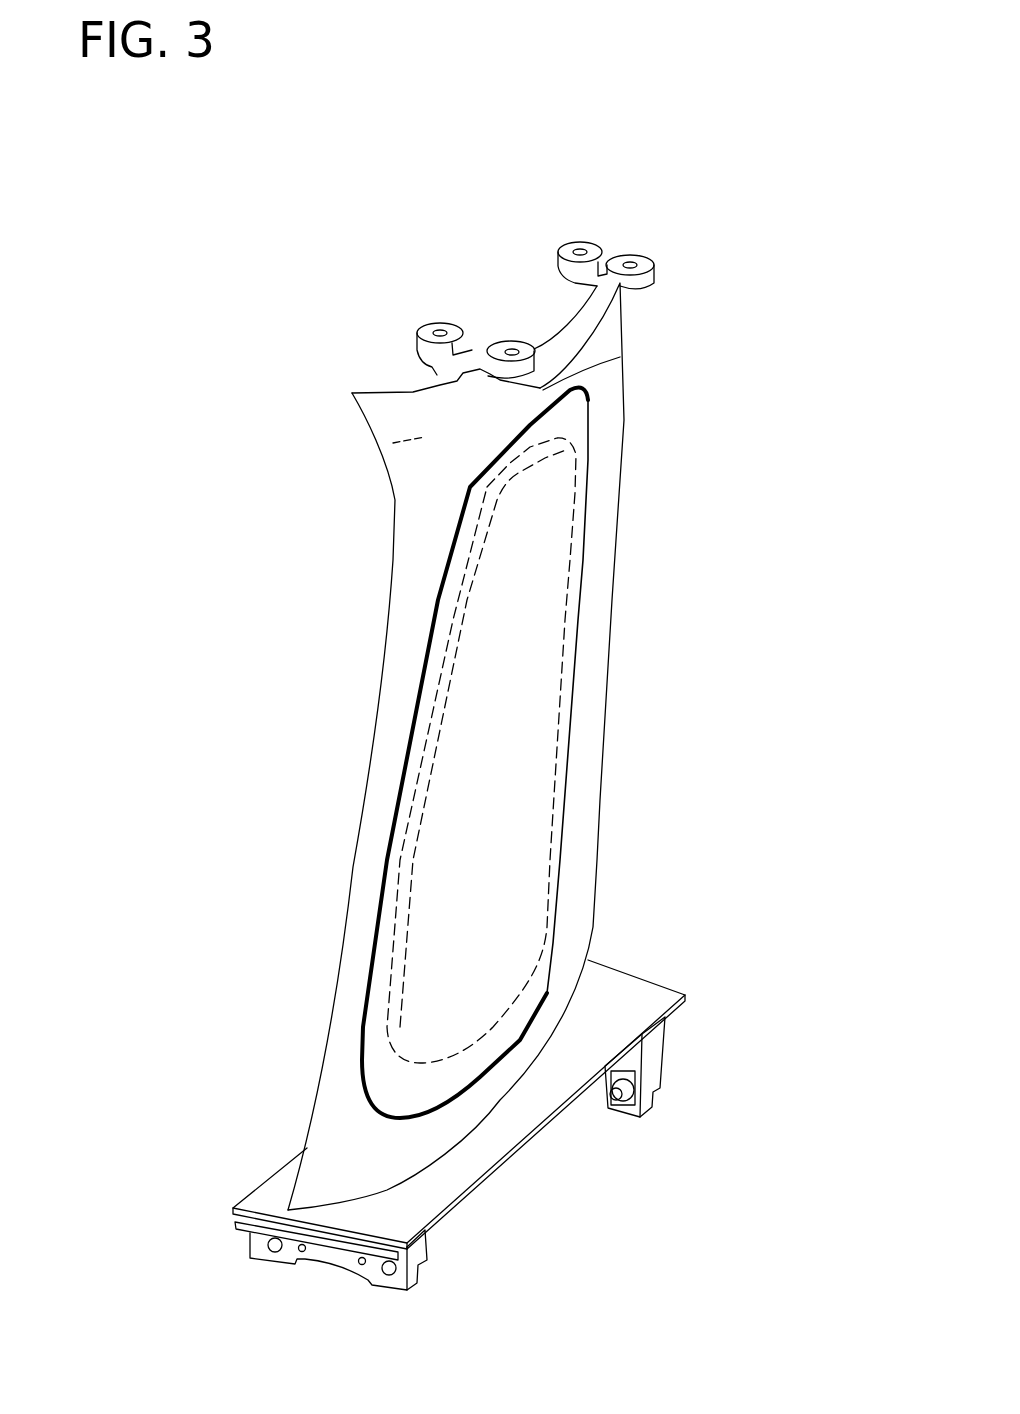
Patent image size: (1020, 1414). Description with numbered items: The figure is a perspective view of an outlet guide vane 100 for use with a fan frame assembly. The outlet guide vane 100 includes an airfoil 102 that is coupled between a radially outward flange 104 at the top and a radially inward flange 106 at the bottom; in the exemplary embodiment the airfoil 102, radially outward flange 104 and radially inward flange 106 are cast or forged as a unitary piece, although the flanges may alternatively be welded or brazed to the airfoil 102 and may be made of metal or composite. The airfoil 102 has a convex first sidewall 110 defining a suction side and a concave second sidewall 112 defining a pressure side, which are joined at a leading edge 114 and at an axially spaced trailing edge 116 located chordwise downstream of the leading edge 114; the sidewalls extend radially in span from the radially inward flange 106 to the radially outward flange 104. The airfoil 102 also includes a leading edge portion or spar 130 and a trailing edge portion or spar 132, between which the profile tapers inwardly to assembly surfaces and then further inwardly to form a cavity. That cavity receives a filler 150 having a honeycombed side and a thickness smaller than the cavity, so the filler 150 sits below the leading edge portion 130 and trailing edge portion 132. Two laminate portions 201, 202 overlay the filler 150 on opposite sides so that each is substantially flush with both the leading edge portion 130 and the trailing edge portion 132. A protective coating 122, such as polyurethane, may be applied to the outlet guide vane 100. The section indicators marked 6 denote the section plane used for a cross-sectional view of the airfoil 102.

The outlet guide vane 100 is at (312, 228).
The airfoil 102 is at (206, 956).
The radially outward flange 104 is at (623, 257).
The radially inward flange 106 is at (443, 1210).
The first sidewall 110 is at (620, 357).
The second sidewall 112 is at (393, 443).
The leading edge 114 is at (310, 1116).
The trailing edge 116 is at (623, 423).
The protective coating 122 is at (402, 703).
The leading edge portion 130 is at (353, 878).
The trailing edge portion 132 is at (606, 493).
The filler 150 is at (538, 741).
The laminate portion 201 is at (577, 564).
The laminate portion 202 is at (475, 495).
The section line 6- 6 is at (628, 683).